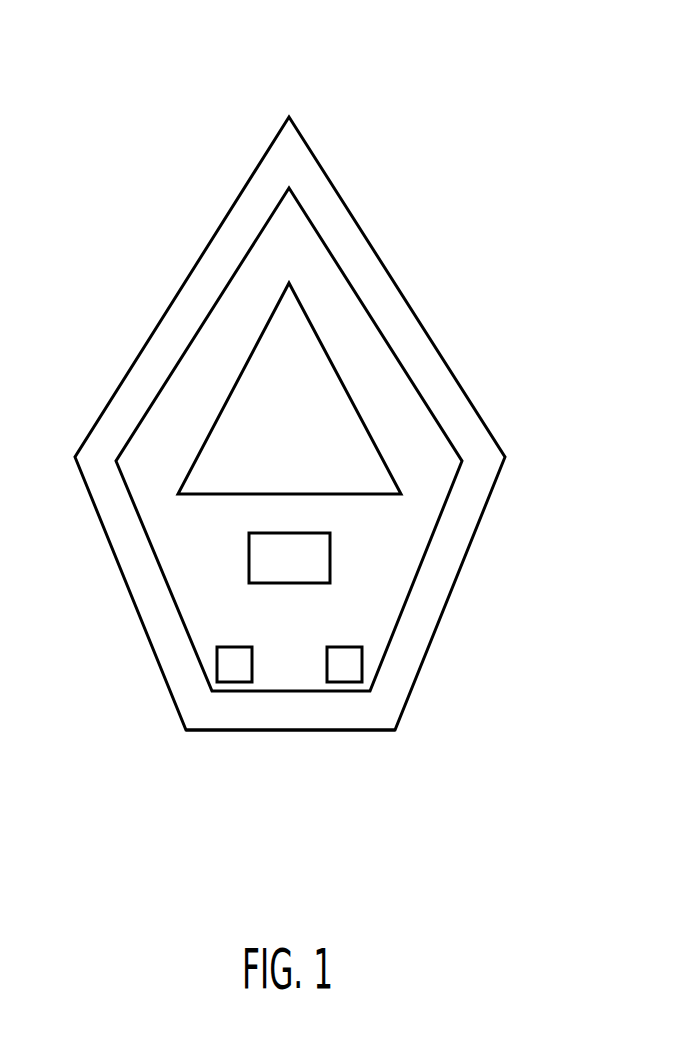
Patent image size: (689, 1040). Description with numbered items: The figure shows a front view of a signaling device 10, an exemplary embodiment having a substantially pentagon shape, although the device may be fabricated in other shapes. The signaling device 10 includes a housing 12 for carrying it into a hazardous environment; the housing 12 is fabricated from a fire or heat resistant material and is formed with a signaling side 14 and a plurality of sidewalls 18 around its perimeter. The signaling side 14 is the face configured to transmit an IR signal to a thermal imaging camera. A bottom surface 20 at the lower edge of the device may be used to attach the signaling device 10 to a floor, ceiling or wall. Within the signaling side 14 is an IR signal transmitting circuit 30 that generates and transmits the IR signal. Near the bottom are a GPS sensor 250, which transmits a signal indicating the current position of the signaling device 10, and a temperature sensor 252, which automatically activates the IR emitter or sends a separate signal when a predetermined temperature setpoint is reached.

The signaling device 10 is at (512, 128).
The housing 12 is at (412, 308).
The signaling side 14 is at (303, 634).
The sidewalls 18 is at (185, 280).
The bottom surface 20 is at (257, 730).
The IR signal transmitting circuit 30 is at (330, 550).
The GPS sensor 250 is at (232, 666).
The temperature sensor 252 is at (350, 666).